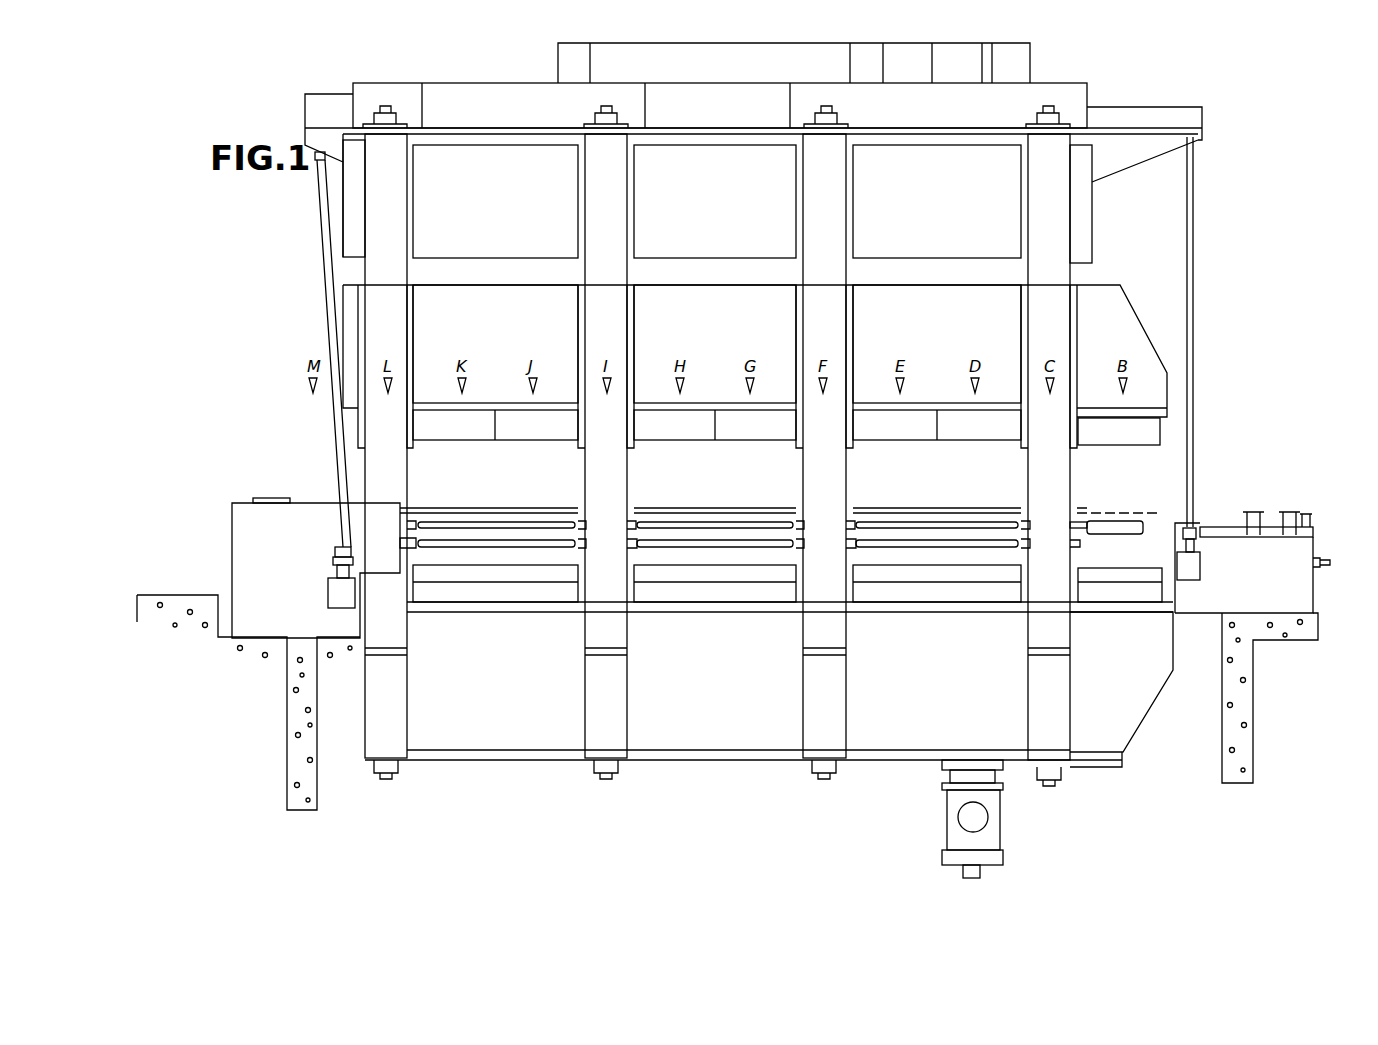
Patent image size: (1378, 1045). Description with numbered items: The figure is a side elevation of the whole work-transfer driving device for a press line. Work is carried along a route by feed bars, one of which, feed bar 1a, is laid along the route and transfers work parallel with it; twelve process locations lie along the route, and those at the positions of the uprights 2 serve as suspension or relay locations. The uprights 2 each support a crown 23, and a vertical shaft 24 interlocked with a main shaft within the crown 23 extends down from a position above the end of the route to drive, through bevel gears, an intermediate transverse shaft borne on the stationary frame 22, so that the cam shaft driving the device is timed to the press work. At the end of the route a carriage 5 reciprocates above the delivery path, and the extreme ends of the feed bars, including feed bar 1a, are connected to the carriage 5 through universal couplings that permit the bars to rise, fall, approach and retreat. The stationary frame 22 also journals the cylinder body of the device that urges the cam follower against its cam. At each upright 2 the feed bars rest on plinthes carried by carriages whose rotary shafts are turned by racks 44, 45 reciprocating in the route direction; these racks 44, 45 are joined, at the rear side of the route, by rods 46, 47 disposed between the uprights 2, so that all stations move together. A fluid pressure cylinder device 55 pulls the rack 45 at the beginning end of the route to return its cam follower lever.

The feed bar 1a is at (527, 505).
The uprights 2 is at (375, 468).
The carriage 5 is at (268, 498).
The stationary frame 22 is at (243, 530).
The crown 23 is at (506, 212).
The vertical shaft 24 is at (323, 262).
The rack 44 is at (400, 538).
The rack 45 is at (417, 523).
The rod 46 is at (493, 542).
The rod 47 is at (478, 517).
The fluid pressure cylinder device 55 is at (1143, 528).